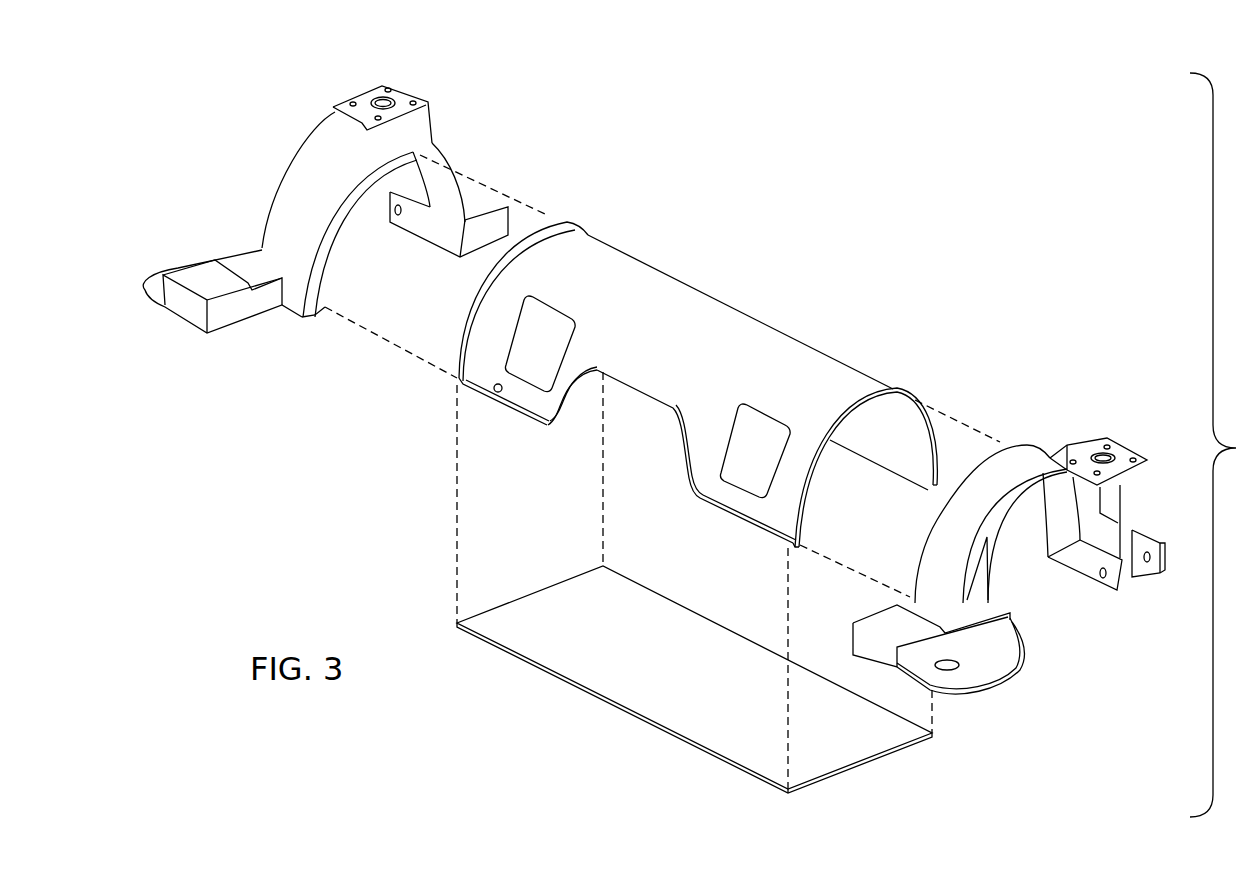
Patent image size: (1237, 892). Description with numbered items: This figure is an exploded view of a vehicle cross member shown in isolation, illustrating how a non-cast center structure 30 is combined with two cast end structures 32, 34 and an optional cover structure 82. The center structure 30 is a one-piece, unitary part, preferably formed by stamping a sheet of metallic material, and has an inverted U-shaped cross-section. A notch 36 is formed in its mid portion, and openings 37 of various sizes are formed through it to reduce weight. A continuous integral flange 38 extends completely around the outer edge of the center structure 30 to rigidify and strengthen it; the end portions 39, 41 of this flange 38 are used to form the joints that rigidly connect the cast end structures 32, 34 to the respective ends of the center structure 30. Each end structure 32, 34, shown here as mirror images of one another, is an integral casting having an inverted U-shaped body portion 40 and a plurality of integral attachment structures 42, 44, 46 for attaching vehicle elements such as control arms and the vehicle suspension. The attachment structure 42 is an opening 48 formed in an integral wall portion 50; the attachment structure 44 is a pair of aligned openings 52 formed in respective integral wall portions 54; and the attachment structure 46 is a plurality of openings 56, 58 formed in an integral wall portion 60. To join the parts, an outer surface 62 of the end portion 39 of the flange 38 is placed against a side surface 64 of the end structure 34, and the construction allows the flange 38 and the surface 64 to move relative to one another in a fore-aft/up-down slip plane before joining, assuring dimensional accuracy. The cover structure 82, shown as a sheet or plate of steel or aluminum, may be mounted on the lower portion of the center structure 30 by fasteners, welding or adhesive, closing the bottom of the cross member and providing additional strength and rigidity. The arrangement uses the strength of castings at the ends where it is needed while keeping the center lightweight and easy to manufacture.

The center structure 30 is at (767, 307).
The end structure 32 is at (1052, 445).
The end structure 34 is at (467, 165).
The notch 36 is at (568, 403).
The openings 37 is at (733, 437).
The flange 38 is at (470, 345).
The end portion of the flange 39 is at (567, 222).
The body portion 40 is at (318, 148).
The end portion of the flange 41 is at (933, 430).
The attachment structure 42 is at (168, 262).
The attachment structure 44 is at (405, 237).
The attachment structure 46 is at (437, 83).
The opening 48 is at (947, 670).
The wall portion 50 is at (997, 667).
The aligned openings 52 is at (1103, 578).
The wall portions 54 is at (1150, 543).
The openings 56 is at (413, 100).
The opening 58 is at (380, 96).
The wall portion 60 is at (353, 100).
The outer surface of end portion 62 is at (880, 390).
The side surface 64 is at (352, 183).
The cover structure 82 is at (559, 677).